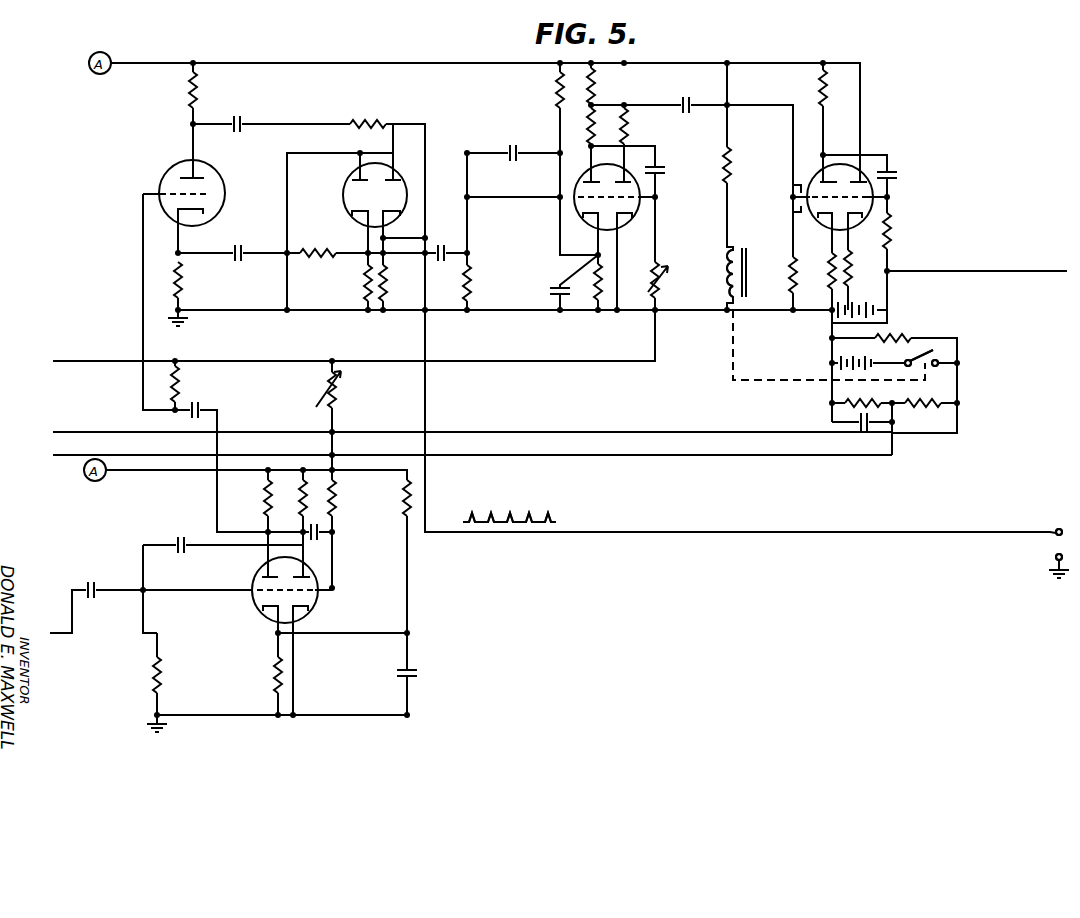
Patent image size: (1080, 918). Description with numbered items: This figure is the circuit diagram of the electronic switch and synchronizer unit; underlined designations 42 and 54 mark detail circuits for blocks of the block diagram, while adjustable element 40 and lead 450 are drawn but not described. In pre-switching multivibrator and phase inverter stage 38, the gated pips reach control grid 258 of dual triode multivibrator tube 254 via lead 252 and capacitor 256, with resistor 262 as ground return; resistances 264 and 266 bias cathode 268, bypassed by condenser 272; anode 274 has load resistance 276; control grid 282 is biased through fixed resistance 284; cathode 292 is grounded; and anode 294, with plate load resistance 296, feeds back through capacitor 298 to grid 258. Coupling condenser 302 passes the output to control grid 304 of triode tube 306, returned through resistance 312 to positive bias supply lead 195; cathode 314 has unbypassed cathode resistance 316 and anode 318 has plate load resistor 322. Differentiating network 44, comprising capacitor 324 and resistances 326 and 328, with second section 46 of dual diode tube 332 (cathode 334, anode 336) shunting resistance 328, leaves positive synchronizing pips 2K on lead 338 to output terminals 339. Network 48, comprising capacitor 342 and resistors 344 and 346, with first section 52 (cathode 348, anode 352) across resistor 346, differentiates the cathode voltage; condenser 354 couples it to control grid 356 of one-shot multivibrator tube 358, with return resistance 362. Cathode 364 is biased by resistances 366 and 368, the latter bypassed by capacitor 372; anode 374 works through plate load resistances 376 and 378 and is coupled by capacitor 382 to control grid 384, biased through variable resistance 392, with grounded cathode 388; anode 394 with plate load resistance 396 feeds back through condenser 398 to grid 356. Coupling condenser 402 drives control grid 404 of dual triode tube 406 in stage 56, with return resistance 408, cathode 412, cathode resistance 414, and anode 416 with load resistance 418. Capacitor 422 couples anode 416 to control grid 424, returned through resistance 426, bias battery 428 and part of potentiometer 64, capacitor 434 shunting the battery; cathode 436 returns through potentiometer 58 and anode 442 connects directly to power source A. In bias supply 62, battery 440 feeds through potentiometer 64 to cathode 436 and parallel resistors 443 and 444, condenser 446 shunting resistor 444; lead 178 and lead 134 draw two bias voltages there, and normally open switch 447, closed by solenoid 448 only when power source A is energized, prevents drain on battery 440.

The plate load resistor 322 is at (200, 92).
The capacitor 324 is at (242, 110).
The resistance element 326 is at (366, 118).
The differentiating network 44 is at (450, 123).
The anode 318 is at (185, 165).
The vacuum tube 42 is at (145, 169).
The triode tube 306 is at (210, 170).
The control grid 304 is at (212, 190).
The cathode 314 is at (206, 216).
The capacitor 342 is at (243, 240).
The cathode resistance 316 is at (183, 280).
The anode 352 is at (352, 178).
The dual diode vacuum tube 332 is at (343, 200).
The first section of diode 52 is at (368, 205).
The second section of diode 46 is at (401, 205).
The anode 336 is at (395, 178).
The cathode 348 is at (360, 216).
The resistor 344 is at (318, 262).
The differentiating network 48 is at (320, 301).
The resistor 346 is at (365, 270).
The cathode 334 is at (404, 233).
The condenser 354 is at (445, 232).
The resistance element 328 is at (386, 284).
The resistance 362 is at (470, 284).
The condenser 398 is at (515, 138).
The vacuum tube 54 is at (543, 189).
The resistance 366 is at (559, 100).
The plate load resistance 378 is at (593, 80).
The plate load resistance 376 is at (590, 128).
The anode 374 is at (590, 160).
The anode 394 is at (625, 176).
The plate load resistance 396 is at (627, 128).
The control grid 356 is at (578, 210).
The cathode 364 is at (590, 245).
The one-shot multivibrator tube 358 is at (630, 252).
The capacitor 372 is at (550, 290).
The resistance 368 is at (597, 280).
The capacitor 382 is at (666, 170).
The control grid 384 is at (658, 197).
The cathode 388 is at (657, 220).
The variable resistance 392 is at (661, 288).
The coupling condenser 402 is at (687, 97).
The solenoid 448 is at (729, 270).
The load resistance 418 is at (815, 90).
The anode 416 is at (822, 170).
The control grid 404 is at (792, 186).
The dual triode tube 406 is at (792, 214).
The resistance 408 is at (792, 265).
The cathode 412 is at (831, 235).
The cathode resistance 414 is at (831, 275).
The switching, pulse-shaping and phase-inverting stage 56 is at (905, 133).
The anode 442 is at (885, 175).
The capacitor 422 is at (900, 175).
The control grid 424 is at (890, 197).
The resistance 426 is at (891, 234).
The cathode 436 is at (850, 240).
The potentiometer 58 is at (849, 262).
The bias battery 428 is at (870, 290).
The capacitor 434 is at (832, 323).
The potentiometer control 64 is at (905, 338).
The battery 440 is at (831, 363).
The normally open switch 447 is at (920, 357).
The resistor 444 is at (860, 401).
The resistor 443 is at (920, 410).
The condenser 446 is at (860, 430).
The power supply 62 is at (1000, 396).
The output lead 450 is at (1055, 262).
The positive bias supply lead 195 is at (65, 361).
The resistance 312 is at (181, 380).
The coupling condenser 302 is at (200, 410).
The variable resistor 40 is at (331, 385).
The lead 178 is at (55, 432).
The lead 134 is at (57, 455).
The load resistance 276 is at (266, 495).
The plate load resistance 296 is at (303, 515).
The fixed resistance 284 is at (335, 508).
The resistance 264 is at (405, 490).
The capacitor 298 is at (190, 528).
The pre-switching multivibrator and phase inverter stage 38 is at (377, 558).
The anode 274 is at (267, 575).
The control grid 258 is at (256, 590).
The anode 294 is at (306, 582).
The control grid 282 is at (331, 590).
The dual triode multivibrator tube 254 is at (320, 605).
The cathode 268 is at (265, 612).
The cathode 292 is at (301, 612).
The resistor 262 is at (161, 670).
The cathode resistance 266 is at (276, 678).
The bypass condenser 272 is at (418, 674).
The capacitor 256 is at (92, 582).
The lead 252 is at (52, 632).
The synchronizing voltage wave form 2K is at (500, 518).
The lead 338 is at (668, 532).
The output terminals 339 is at (1056, 558).